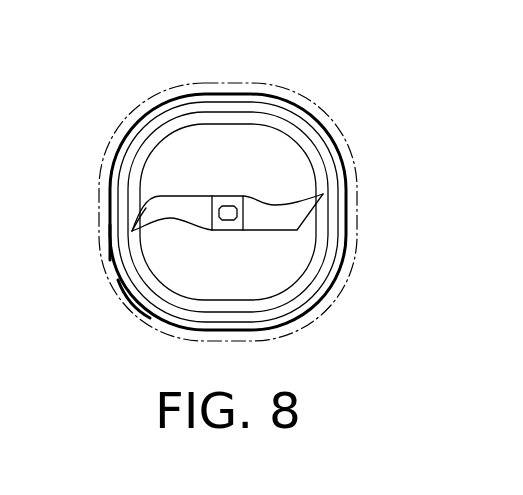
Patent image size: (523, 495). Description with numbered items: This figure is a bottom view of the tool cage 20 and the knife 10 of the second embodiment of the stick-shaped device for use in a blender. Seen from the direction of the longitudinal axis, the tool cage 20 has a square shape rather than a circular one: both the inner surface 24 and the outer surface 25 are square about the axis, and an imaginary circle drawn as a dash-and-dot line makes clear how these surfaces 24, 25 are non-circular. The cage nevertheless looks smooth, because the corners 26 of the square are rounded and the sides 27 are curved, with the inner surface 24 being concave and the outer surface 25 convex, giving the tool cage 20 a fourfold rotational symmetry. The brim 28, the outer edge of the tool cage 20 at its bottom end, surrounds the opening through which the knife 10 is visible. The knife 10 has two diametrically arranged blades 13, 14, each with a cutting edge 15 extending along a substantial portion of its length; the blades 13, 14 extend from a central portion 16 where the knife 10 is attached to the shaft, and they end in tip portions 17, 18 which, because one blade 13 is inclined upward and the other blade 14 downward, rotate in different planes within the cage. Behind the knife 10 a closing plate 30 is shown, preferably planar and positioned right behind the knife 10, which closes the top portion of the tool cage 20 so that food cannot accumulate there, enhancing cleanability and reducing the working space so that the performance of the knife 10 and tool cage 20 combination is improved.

The knife 10 is at (225, 219).
The blade 13 is at (178, 207).
The blade 14 is at (293, 215).
The cutting edge 15 is at (170, 225).
The central portion 16 is at (226, 196).
The tip portion 17 is at (132, 231).
The tip portion 18 is at (323, 194).
The tool cage 20 is at (254, 92).
The inner surface 24 is at (318, 280).
The outer surface 25 is at (168, 97).
The corners 26 is at (132, 296).
The sides 27 is at (206, 96).
The brim 28 is at (110, 244).
The closing plate 30 is at (280, 170).